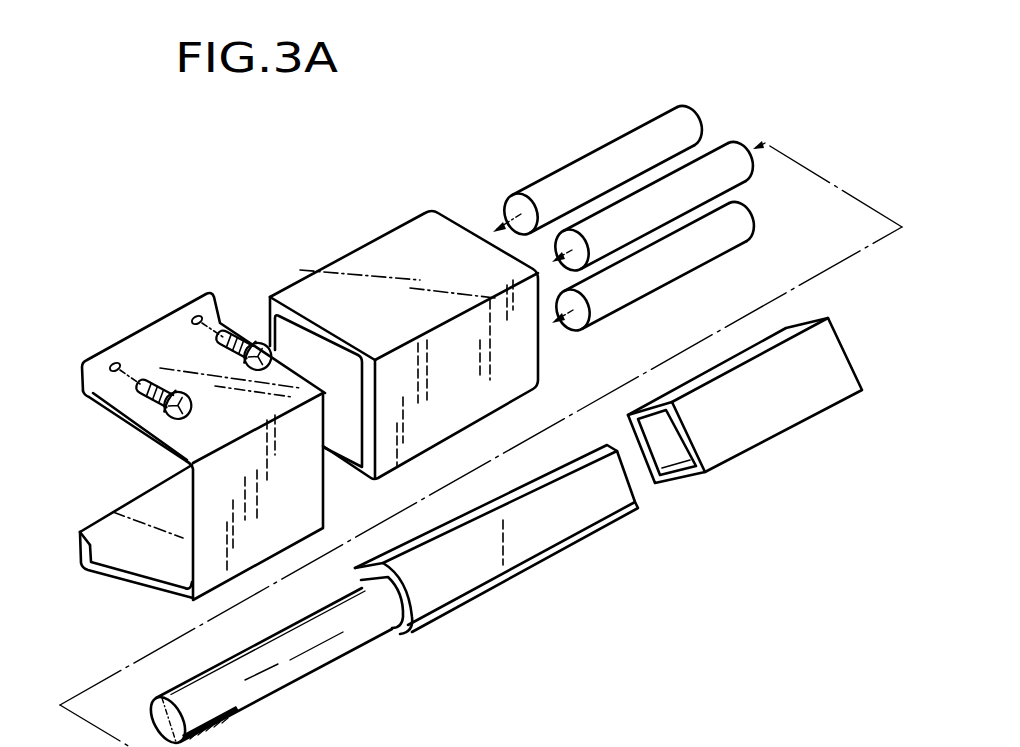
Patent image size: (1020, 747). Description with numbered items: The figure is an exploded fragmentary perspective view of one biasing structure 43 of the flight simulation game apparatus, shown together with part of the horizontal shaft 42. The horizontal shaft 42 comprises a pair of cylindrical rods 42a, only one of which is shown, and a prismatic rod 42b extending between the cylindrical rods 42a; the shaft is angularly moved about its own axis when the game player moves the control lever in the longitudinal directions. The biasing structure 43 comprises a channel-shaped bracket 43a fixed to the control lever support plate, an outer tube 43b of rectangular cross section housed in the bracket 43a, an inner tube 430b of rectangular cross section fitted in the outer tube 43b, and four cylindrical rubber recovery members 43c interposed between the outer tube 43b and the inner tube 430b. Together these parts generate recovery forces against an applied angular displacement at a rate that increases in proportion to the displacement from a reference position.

The biasing structure 43 is at (266, 249).
The channel-shaped bracket 43a is at (180, 350).
The outer tube 43b is at (388, 268).
The cylindrical rubber recovery members 43c is at (623, 210).
The inner tube 430b is at (773, 413).
The horizontal shaft 42 is at (635, 568).
The cylindrical rod 42a is at (340, 642).
The prismatic rod 42b is at (548, 533).